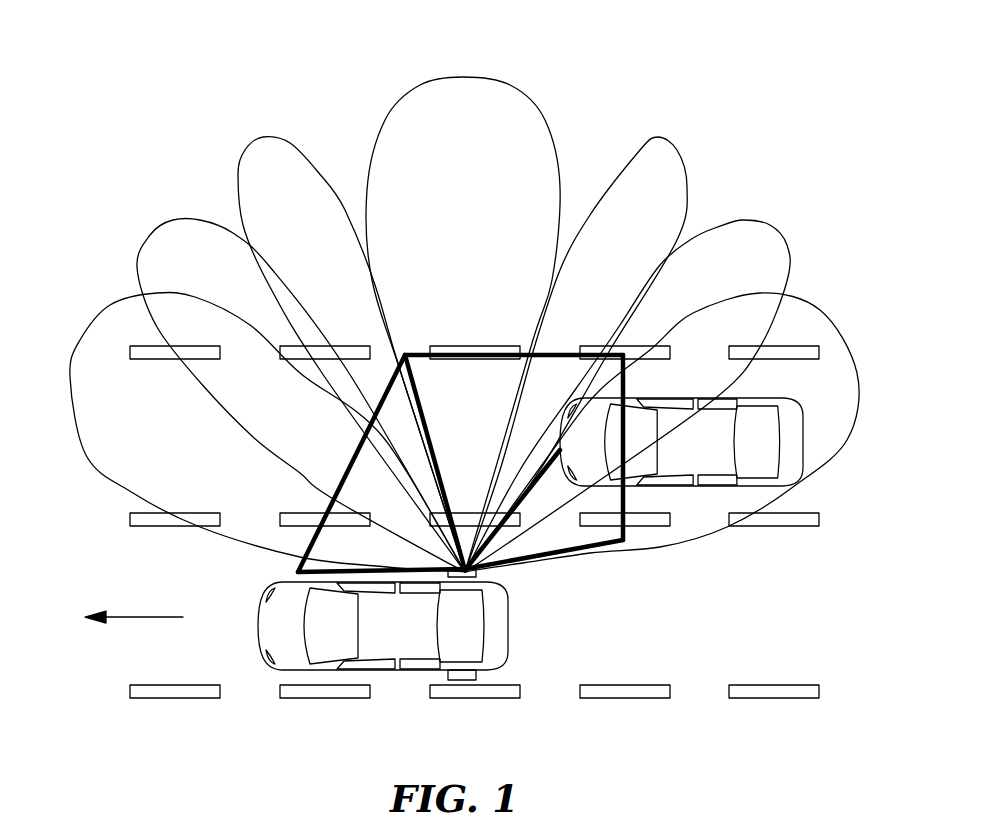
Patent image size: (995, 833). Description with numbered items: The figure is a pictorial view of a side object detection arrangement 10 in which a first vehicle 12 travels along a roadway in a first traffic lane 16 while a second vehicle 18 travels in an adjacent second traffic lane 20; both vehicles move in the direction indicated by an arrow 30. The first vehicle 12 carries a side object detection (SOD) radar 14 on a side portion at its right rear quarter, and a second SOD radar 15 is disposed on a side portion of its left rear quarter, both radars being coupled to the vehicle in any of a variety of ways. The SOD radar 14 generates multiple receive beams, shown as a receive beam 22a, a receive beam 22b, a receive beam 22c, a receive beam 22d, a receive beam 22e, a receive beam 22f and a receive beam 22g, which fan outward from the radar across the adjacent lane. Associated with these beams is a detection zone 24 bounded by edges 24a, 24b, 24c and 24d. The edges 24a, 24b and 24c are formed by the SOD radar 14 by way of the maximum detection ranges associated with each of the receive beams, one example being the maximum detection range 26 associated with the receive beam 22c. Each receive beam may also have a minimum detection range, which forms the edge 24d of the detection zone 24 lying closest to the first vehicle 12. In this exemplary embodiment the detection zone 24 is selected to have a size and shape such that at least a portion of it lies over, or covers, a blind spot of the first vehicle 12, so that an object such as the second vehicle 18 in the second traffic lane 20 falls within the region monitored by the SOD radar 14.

The object detection system 10 is at (133, 136).
The first vehicle 12 is at (509, 632).
The side object detection (SOD) radar 14 is at (480, 579).
The second SOD radar 15 is at (447, 676).
The first traffic lane 16 is at (712, 638).
The second vehicle 18 is at (803, 442).
The second traffic lane 20 is at (162, 452).
The receive beam 22a is at (93, 320).
The receive beam 22b is at (266, 385).
The receive beam 22c is at (258, 138).
The receive beam 22d is at (463, 77).
The receive beam 22e is at (668, 137).
The receive beam 22f is at (775, 225).
The receive beam 22g is at (835, 320).
The detection zone 24 is at (416, 352).
The edge of detection zone 24a is at (478, 352).
The edge of detection zone 24b is at (332, 498).
The edge of detection zone 24c is at (640, 497).
The edge of detection zone 24d is at (594, 550).
The maximum detection range 26 is at (332, 390).
The arrow 30 is at (125, 618).